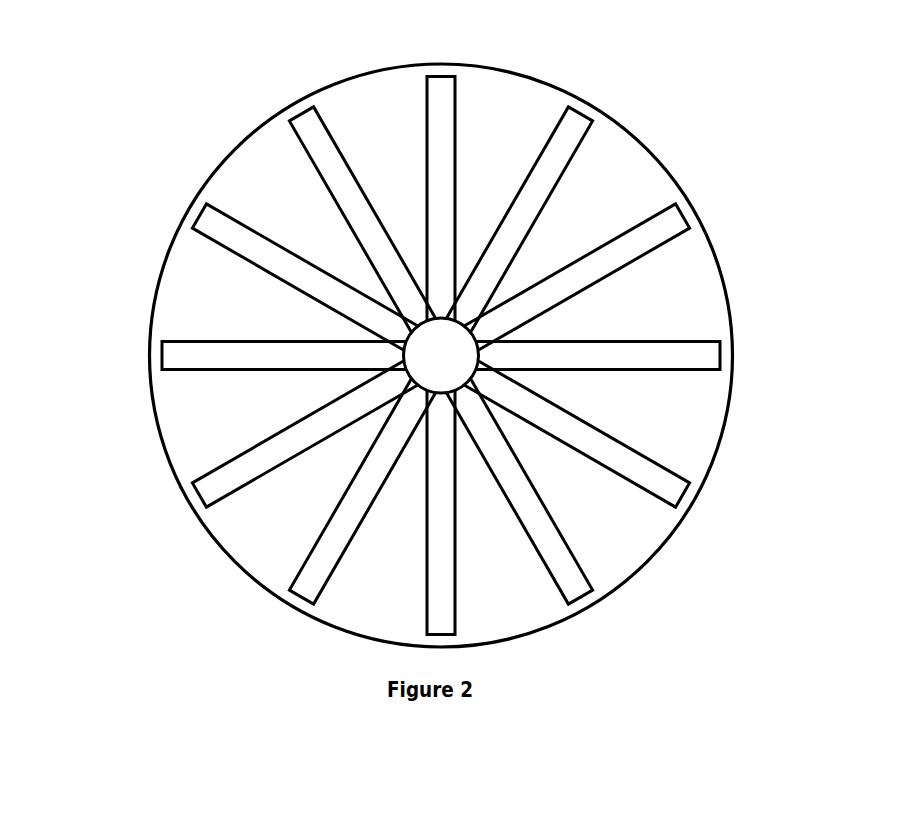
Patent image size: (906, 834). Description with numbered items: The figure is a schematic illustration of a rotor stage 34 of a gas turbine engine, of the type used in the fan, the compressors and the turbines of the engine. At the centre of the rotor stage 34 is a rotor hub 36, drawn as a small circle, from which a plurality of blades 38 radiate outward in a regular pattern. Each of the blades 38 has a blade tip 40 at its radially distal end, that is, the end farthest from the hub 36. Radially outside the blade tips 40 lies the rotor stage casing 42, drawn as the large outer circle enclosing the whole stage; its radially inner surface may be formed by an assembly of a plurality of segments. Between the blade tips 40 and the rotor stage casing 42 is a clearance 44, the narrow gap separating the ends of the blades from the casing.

The rotor stage 34 is at (156, 181).
The rotor hub 36 is at (452, 350).
The blades 38 is at (619, 461).
The blade tip 40 is at (679, 498).
The rotor stage casing 42 is at (654, 146).
The clearance 44 is at (419, 72).